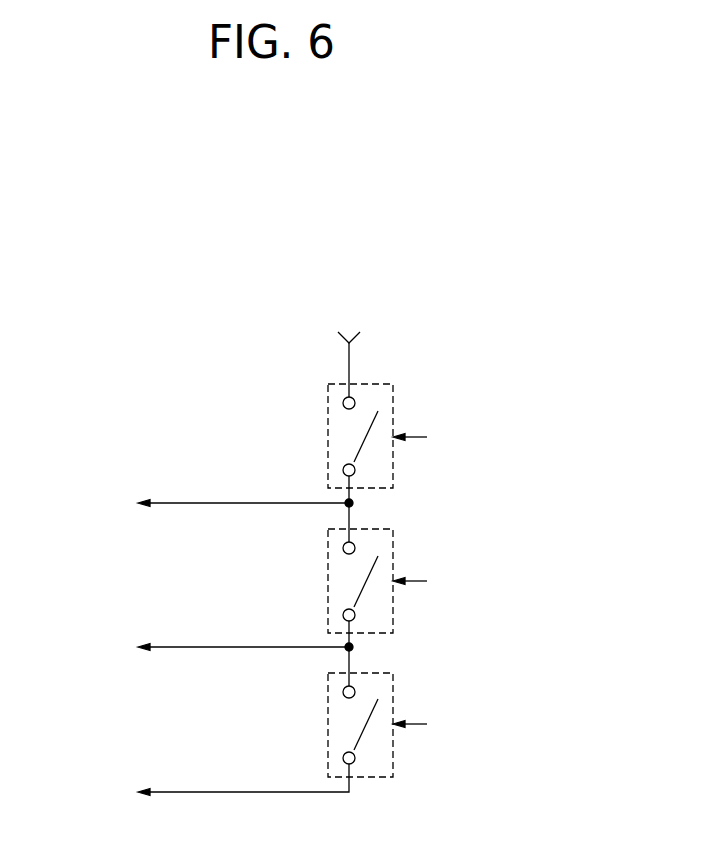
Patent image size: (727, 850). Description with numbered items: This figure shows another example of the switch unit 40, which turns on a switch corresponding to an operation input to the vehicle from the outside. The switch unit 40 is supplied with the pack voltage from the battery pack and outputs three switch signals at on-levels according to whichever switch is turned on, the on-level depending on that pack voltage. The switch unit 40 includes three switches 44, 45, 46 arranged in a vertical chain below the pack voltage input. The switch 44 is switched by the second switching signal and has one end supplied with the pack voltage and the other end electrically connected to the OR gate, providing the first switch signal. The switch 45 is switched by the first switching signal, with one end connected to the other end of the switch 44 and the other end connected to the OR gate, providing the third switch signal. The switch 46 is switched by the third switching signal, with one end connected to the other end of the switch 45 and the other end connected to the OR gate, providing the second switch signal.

The switch unit 40 is at (488, 355).
The switch 44 is at (328, 437).
The switch 45 is at (328, 581).
The switch 46 is at (328, 724).